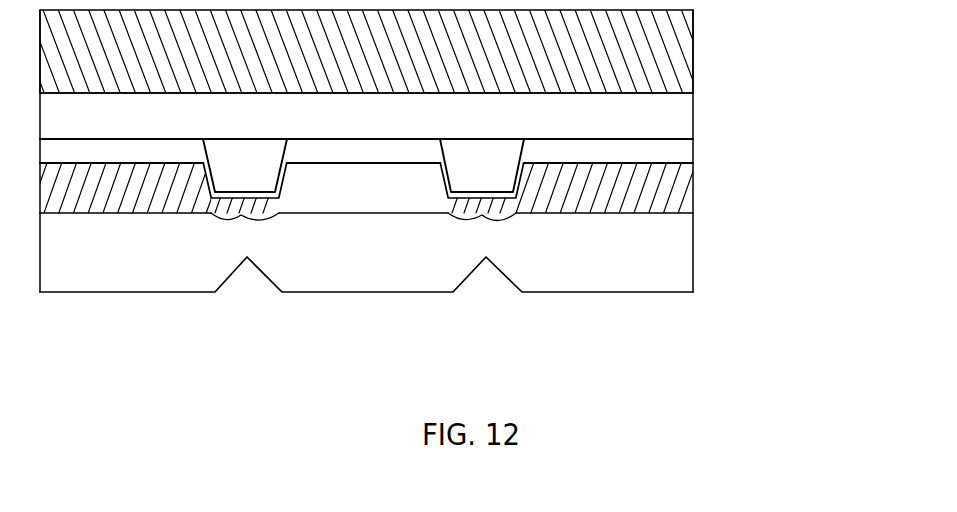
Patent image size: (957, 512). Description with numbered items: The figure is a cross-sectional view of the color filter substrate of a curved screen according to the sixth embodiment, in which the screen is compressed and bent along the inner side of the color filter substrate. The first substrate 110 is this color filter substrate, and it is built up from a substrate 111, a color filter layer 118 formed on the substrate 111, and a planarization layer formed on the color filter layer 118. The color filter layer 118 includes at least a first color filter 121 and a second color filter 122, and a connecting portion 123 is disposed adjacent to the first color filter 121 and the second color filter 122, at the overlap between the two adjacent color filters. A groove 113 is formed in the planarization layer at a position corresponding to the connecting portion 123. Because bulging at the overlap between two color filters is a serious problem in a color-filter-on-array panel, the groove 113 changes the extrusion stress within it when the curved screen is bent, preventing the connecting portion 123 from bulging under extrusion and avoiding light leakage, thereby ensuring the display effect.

The first substrate 110 is at (448, 186).
The substrate 111 is at (677, 49).
The groove 113 is at (495, 290).
The color filter layer 118 is at (426, 250).
The first color filter 121 is at (672, 186).
The second color filter 122 is at (422, 203).
The connecting portion 123 is at (487, 207).